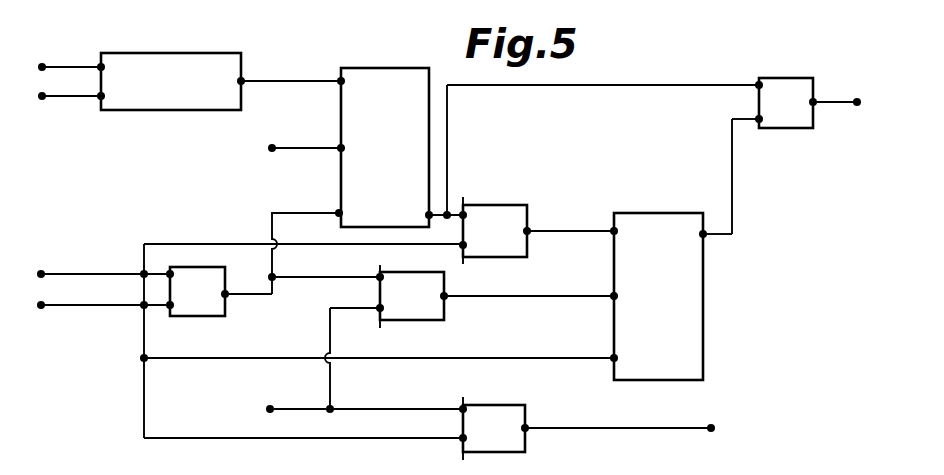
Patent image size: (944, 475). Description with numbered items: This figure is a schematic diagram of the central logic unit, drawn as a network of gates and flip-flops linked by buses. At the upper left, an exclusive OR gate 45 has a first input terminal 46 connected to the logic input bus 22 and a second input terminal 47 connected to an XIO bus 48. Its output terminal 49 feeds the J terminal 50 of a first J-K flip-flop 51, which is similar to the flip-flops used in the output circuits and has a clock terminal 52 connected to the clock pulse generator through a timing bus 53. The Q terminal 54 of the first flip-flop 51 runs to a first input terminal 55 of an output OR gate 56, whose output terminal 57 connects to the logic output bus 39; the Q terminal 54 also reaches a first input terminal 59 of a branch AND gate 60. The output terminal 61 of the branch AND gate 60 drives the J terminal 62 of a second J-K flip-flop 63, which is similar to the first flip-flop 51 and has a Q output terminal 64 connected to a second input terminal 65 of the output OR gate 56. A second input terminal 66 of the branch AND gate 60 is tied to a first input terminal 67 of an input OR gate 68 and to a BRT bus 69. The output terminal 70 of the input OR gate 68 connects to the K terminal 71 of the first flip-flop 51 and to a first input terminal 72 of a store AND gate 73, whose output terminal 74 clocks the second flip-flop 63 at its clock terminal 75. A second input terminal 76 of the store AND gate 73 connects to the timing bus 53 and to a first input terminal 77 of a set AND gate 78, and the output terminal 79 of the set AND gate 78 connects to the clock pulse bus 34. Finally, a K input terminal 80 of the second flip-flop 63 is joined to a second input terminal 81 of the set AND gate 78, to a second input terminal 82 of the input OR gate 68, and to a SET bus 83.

The logic input bus 22 is at (42, 58).
The exclusive OR gate 45 is at (203, 52).
The first input terminal 46 is at (100, 62).
The second input terminal 47 is at (100, 104).
The XIO bus 48 is at (42, 104).
The output terminal 49 is at (245, 78).
The J terminal 50 is at (339, 78).
The first J-K flip-flop 51 is at (403, 68).
The clock terminal 52 is at (339, 143).
The timing bus 53 is at (268, 148).
The Q terminal 54 is at (426, 212).
The first input terminal 55 is at (758, 82).
The output OR gate 56 is at (794, 78).
The output terminal 57 is at (816, 100).
The logic output bus 39 is at (856, 110).
The first input terminal 59 is at (462, 212).
The branch AND gate 60 is at (521, 205).
The output terminal 61 is at (531, 231).
The J terminal 62 is at (612, 234).
The second J-K flip-flop 63 is at (678, 213).
The Q output terminal 64 is at (707, 236).
The second input terminal 65 is at (760, 123).
The second input terminal 66 is at (460, 246).
The first input terminal 67 is at (170, 270).
The input OR gate 68 is at (224, 268).
The BRT bus 69 is at (42, 266).
The output terminal 70 is at (228, 298).
The K terminal 71 is at (337, 210).
The first input terminal 72 is at (378, 274).
The store AND gate 73 is at (418, 322).
The output terminal 74 is at (448, 300).
The clock terminal 75 is at (612, 298).
The second input terminal 76 is at (378, 307).
The first input terminal 77 is at (460, 405).
The set AND gate 78 is at (495, 405).
The output terminal 79 is at (529, 426).
The K input terminal 80 is at (612, 362).
The second input terminal 81 is at (459, 440).
The second input terminal 82 is at (168, 318).
The SET bus 83 is at (42, 312).
The clock pulse bus 34 is at (715, 430).